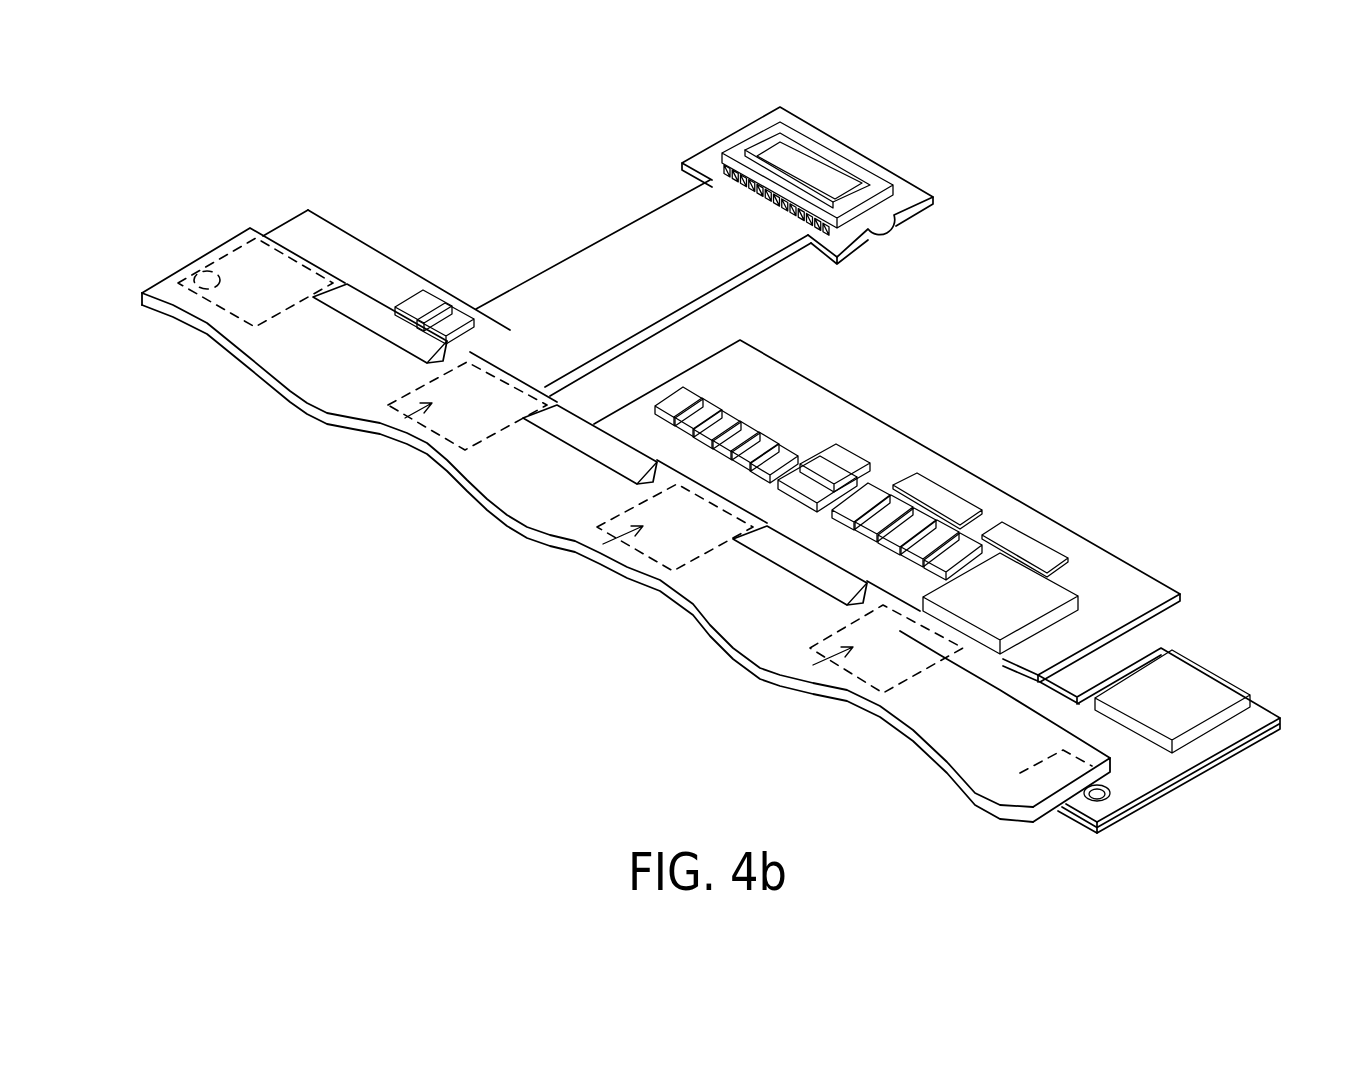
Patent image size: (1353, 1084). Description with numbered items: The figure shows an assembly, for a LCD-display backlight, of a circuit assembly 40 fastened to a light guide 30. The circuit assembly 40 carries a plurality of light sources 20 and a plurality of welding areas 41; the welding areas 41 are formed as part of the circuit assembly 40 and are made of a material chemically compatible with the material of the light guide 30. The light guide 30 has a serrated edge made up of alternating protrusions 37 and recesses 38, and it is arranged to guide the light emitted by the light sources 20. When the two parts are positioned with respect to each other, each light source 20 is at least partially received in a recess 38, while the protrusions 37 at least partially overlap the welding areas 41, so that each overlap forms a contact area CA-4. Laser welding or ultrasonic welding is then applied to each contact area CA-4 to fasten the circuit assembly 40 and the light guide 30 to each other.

The circuit assembly 40 is at (600, 235).
The protrusion 37 is at (293, 258).
The light guide 30 is at (990, 782).
The light source 20 is at (403, 337).
The recess 38 is at (345, 318).
The welding area 41 is at (218, 337).
The contact area CA-4 is at (405, 418).